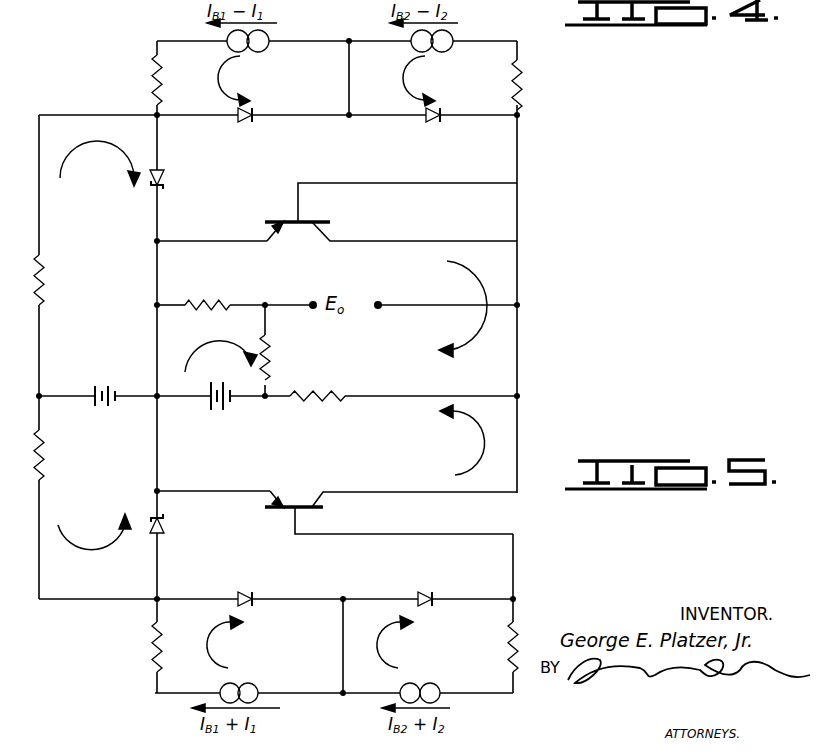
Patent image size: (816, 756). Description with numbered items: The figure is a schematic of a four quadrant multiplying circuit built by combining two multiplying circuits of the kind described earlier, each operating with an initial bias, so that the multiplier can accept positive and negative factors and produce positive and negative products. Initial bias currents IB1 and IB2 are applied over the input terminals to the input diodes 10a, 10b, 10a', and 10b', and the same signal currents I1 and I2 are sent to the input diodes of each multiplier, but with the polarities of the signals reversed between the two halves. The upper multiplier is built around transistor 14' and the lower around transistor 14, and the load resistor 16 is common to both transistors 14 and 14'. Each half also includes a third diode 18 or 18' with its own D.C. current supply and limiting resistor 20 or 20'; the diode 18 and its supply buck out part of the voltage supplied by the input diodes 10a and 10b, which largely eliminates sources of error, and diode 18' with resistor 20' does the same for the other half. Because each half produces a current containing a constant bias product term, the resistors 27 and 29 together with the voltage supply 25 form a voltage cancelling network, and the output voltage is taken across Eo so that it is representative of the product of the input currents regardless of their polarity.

The input diode 10a is at (259, 610).
The input diode 10b is at (441, 610).
The input diode 10a' is at (255, 127).
The input diode 10b' is at (444, 127).
The transistor 14 is at (391, 500).
The transistor 14' is at (391, 224).
The load resistor 16 is at (313, 400).
The third diode 18 is at (182, 521).
The third diode 18' is at (181, 177).
The limiting resistor 20 is at (65, 455).
The limiting resistor 20' is at (68, 280).
The voltage supply 25 is at (201, 426).
The resistor 27 is at (270, 353).
The resistor 29 is at (205, 303).